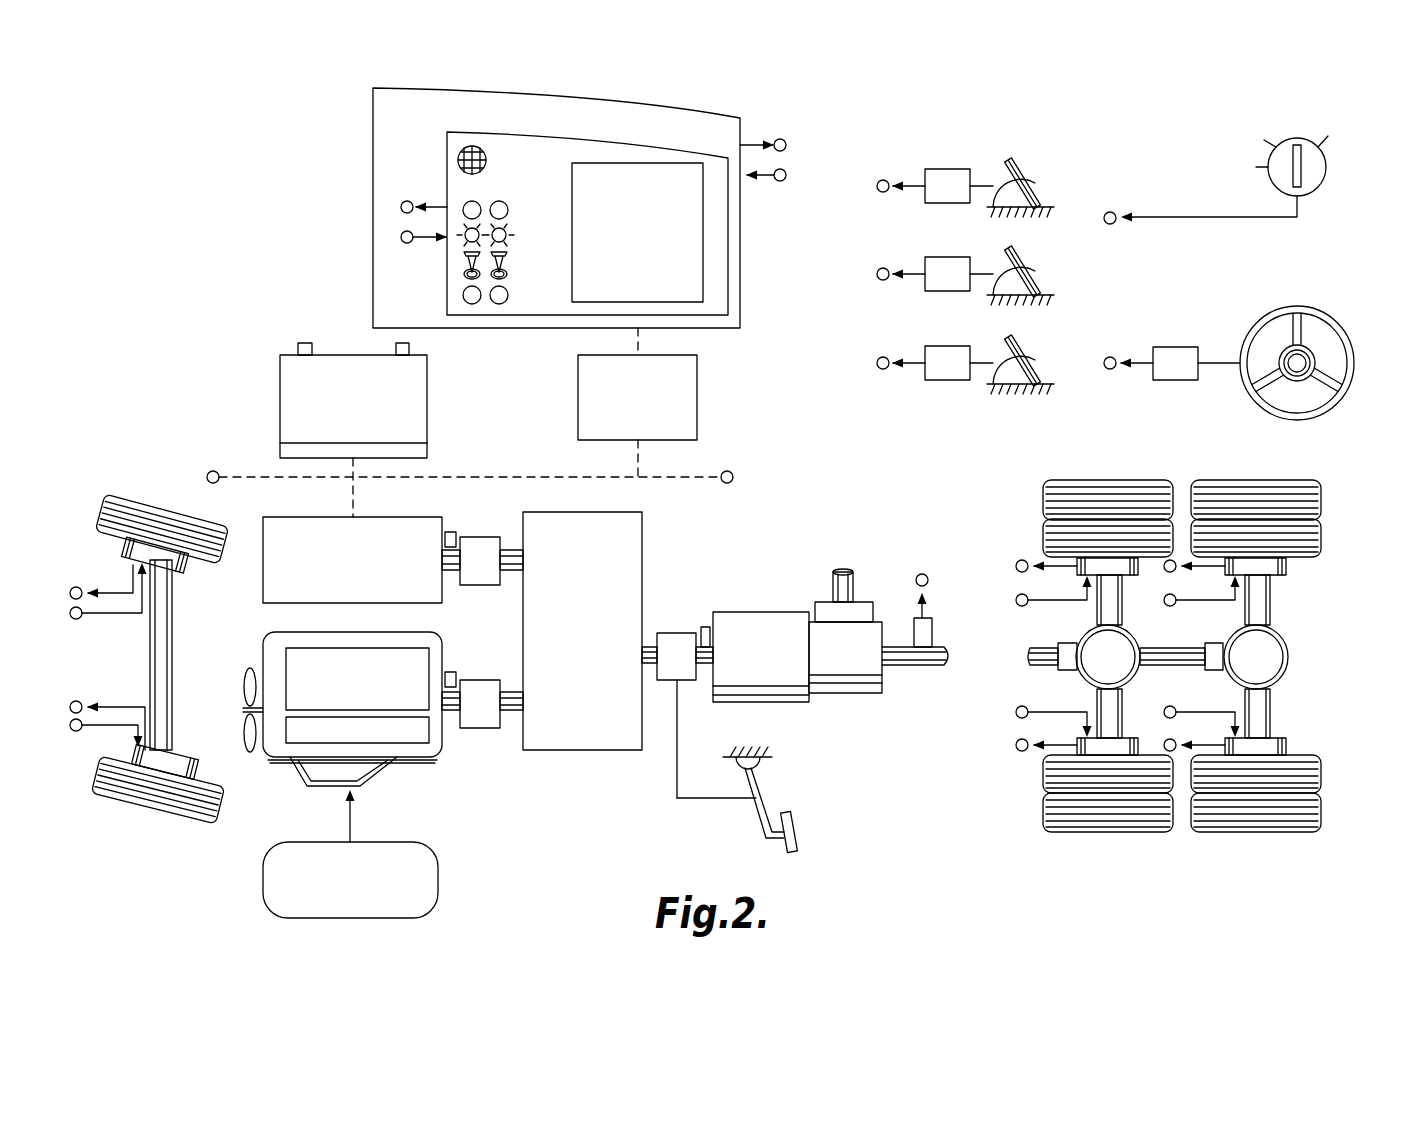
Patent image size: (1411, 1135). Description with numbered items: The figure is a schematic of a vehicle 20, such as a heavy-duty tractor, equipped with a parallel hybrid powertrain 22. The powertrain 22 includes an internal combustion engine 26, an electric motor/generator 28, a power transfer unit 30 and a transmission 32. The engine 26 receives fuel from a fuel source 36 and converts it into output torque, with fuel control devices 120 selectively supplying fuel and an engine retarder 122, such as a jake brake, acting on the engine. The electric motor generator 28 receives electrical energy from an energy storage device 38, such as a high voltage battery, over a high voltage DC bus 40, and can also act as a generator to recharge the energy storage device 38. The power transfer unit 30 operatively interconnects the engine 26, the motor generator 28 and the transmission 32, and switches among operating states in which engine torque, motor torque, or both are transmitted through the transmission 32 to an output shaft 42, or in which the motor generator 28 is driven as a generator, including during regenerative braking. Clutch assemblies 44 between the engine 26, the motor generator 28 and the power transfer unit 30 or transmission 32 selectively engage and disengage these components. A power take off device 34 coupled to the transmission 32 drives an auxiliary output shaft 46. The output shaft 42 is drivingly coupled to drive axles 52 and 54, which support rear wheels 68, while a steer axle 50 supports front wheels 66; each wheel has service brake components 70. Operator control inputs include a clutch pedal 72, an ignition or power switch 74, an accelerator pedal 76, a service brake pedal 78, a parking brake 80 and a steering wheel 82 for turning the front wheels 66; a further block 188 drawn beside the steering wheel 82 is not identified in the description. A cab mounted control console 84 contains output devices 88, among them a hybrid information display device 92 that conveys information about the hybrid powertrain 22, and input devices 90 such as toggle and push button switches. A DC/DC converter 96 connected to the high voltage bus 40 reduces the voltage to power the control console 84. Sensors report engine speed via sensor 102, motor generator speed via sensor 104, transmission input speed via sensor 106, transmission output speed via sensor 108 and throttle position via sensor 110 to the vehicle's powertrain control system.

The vehicle 20 is at (226, 241).
The parallel hybrid powertrain 22 is at (950, 808).
The internal combustion engine 26 is at (438, 633).
The electric motor/generator 28 is at (285, 516).
The power transfer unit 30 is at (598, 750).
The transmission 32 is at (764, 612).
The power take off device 34 is at (864, 604).
The fuel source 36 is at (438, 878).
The energy storage device 38 is at (280, 390).
The high voltage DC bus 40 is at (532, 477).
The output shaft 42 is at (905, 665).
The clutch assemblies 44 is at (468, 573).
The auxiliary output shaft 46 is at (836, 580).
The steer axle 50 is at (150, 642).
The drive axle 52 is at (1122, 700).
The drive axle 54 is at (1270, 698).
The front wheels 66 is at (100, 497).
The rear wheels 68 is at (1320, 490).
The service brake components 70 is at (192, 582).
The clutch pedal 72 is at (758, 790).
The ignition or power switch 74 is at (1326, 167).
The accelerator pedal 76 is at (1016, 163).
The service brake pedal 78 is at (1038, 282).
The parking brake 80 is at (1036, 371).
The steering wheel 82 is at (1343, 337).
The control console 84 is at (717, 115).
The output devices 88 is at (728, 204).
The input devices 90 is at (495, 192).
The hybrid information display device 92 is at (703, 242).
The DC/DC converter 96 is at (697, 382).
The engine speed sensor 102 is at (452, 672).
The motor generator speed sensor 104 is at (452, 532).
The transmission input speed sensor 106 is at (701, 627).
The transmission output speed sensor 108 is at (932, 625).
The throttle position sensor 110 is at (942, 168).
The fuel control devices 120 is at (286, 680).
The engine retarder 122 is at (429, 728).
The steering sensor 188 is at (1170, 347).